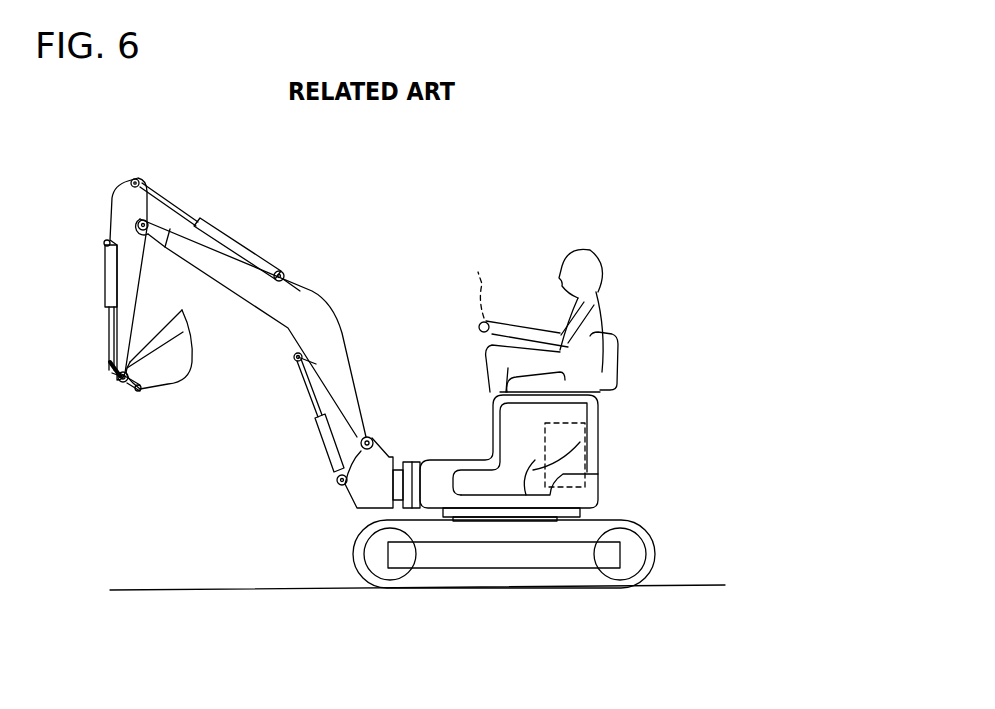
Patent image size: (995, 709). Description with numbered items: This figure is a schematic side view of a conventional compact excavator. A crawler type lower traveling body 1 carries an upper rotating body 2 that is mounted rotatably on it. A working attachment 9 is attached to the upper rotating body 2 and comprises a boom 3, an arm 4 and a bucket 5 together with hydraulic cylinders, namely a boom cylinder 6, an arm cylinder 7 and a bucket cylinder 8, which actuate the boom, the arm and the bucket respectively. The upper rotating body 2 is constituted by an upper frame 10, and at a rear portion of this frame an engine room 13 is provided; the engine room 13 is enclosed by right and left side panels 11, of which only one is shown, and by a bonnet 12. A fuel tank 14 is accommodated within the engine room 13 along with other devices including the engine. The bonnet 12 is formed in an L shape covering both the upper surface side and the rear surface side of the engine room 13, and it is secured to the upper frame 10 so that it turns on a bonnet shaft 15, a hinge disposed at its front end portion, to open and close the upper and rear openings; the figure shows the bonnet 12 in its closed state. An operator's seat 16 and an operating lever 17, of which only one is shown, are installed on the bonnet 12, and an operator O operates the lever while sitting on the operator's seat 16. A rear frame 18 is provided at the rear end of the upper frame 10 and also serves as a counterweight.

The lower traveling body 1 is at (557, 589).
The upper rotating body 2 is at (620, 375).
The boom 3 is at (342, 333).
The arm 4 is at (122, 288).
The bucket 5 is at (166, 386).
The boom cylinder 6 is at (302, 388).
The arm cylinder 7 is at (241, 246).
The bucket cylinder 8 is at (112, 330).
The working attachment 9 is at (315, 285).
The upper frame 10 is at (493, 503).
The side panel 11 is at (497, 447).
The bonnet 12 is at (598, 405).
The engine room 13 is at (565, 477).
The fuel tank 14 is at (585, 442).
The bonnet shaft 15 is at (497, 393).
The operator's seat 16 is at (600, 338).
The operating lever 17 is at (470, 277).
The rear frame 18 is at (592, 497).
The operator O is at (600, 263).